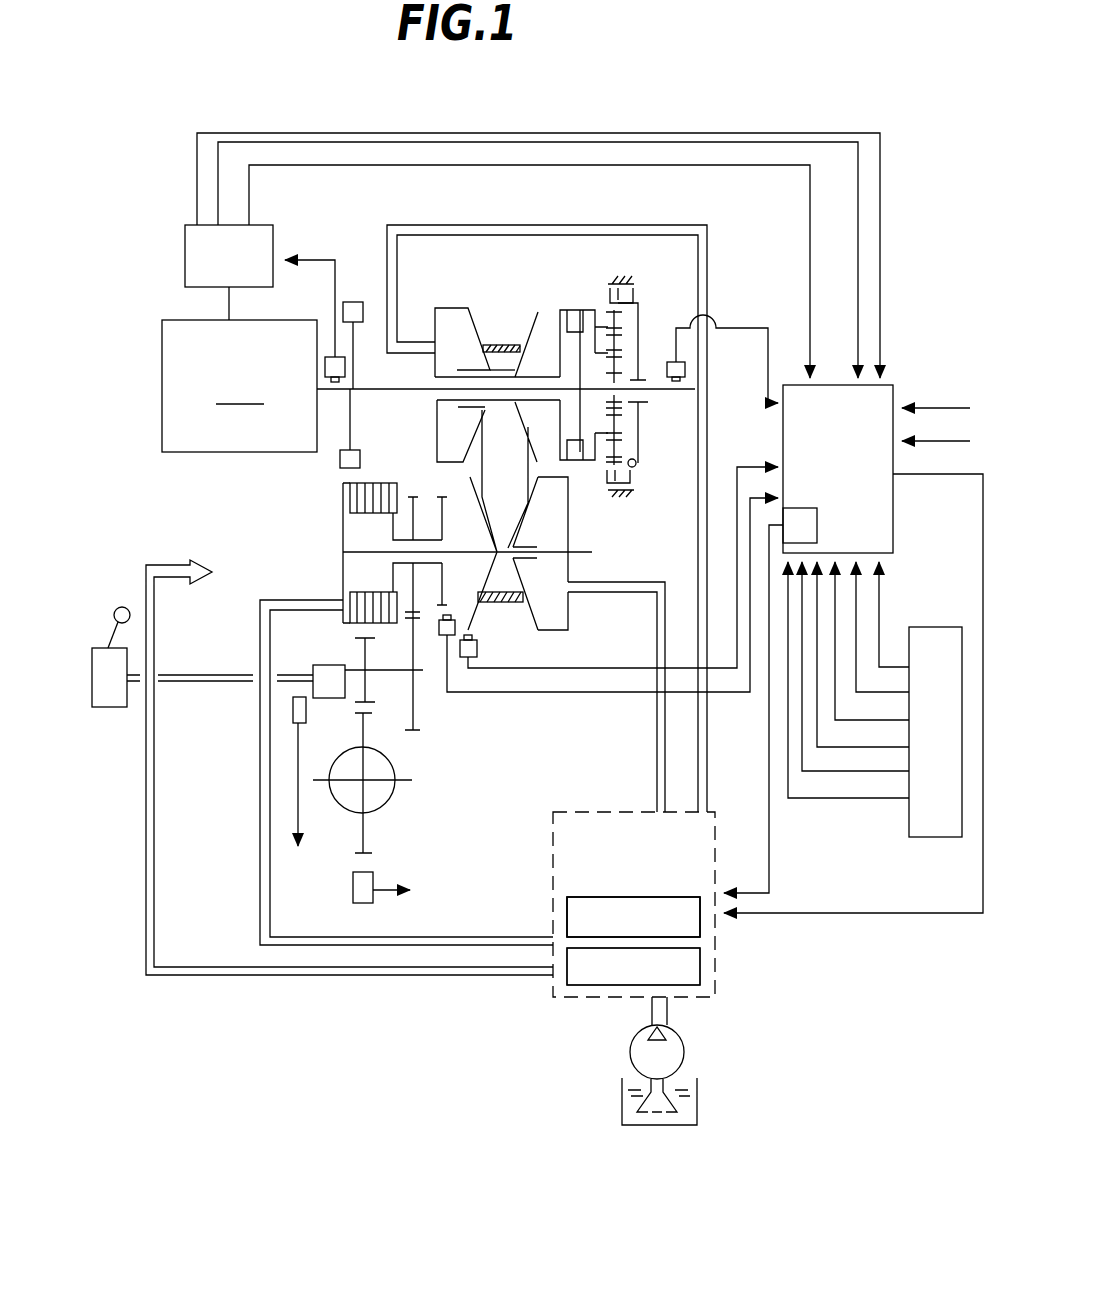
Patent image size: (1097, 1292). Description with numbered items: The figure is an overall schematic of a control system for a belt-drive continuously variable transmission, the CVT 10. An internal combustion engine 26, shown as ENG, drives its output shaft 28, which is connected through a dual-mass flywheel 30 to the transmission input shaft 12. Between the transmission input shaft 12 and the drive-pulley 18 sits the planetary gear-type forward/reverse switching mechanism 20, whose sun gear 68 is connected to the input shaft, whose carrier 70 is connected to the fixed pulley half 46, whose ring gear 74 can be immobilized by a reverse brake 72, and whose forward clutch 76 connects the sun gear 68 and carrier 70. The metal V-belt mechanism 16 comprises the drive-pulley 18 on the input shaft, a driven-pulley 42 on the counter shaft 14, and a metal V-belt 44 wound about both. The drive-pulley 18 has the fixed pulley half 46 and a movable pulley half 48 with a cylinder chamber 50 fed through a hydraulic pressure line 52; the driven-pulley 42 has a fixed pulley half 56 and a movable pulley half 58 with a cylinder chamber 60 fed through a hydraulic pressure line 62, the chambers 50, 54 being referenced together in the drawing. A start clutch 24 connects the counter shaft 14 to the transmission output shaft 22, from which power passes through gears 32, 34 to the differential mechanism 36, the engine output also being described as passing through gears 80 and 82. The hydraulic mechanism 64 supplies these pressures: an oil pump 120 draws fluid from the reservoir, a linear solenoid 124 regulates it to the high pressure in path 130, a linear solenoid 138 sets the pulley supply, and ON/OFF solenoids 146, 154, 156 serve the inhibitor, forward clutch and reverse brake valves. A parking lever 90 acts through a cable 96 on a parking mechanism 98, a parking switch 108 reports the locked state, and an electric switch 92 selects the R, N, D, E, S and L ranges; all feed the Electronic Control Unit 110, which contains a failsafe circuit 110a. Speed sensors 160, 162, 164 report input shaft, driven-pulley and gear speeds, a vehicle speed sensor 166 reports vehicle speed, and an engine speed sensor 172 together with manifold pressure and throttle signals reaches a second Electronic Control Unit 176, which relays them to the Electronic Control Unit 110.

The continuously variable transmission 10 is at (330, 493).
The transmission input shaft 12 is at (405, 393).
The counter shaft 14 is at (463, 557).
The metal V-belt mechanism 16 is at (580, 495).
The drive-pulley 18 is at (485, 303).
The planetary gear-type forward/reverse switching mechanism 20 is at (645, 371).
The transmission output shaft 22 is at (375, 672).
The start clutch 24 is at (382, 483).
The internal combustion engine 26 is at (227, 452).
The output shaft (crankshaft) 28 is at (338, 460).
The dual-mass flywheel 30 is at (355, 302).
The gear 32 is at (357, 633).
The gear 34 is at (367, 853).
The differential mechanism 36 is at (388, 790).
The driven-pulley 42 is at (575, 618).
The metal V-belt 44 is at (512, 462).
The fixed pulley half 46 is at (532, 327).
The movable pulley half 48 is at (458, 307).
The cylinder chamber 50 is at (473, 365).
The hydraulic pressure line 52 is at (477, 223).
The cylinder chamber 54 is at (268, 576).
The fixed pulley half 56 is at (482, 548).
The movable pulley half 58 is at (528, 613).
The cylinder chamber 60 is at (555, 535).
The hydraulic pressure line 62 is at (652, 580).
The hydraulic mechanism 64 is at (577, 810).
The sun gear 68 is at (620, 393).
The carrier 70 is at (632, 420).
The reverse brake 72 is at (633, 295).
The ring gear 74 is at (636, 466).
The forward clutch 76 is at (583, 310).
The gear 80 is at (413, 497).
The gear 82 is at (415, 733).
The parking lever 90 is at (107, 625).
The electric switch 92 is at (938, 627).
The cable 96 is at (195, 681).
The parking mechanism 98 is at (330, 698).
The parking switch 108 is at (290, 712).
The Electronic Control Unit 110 is at (848, 484).
The F/S (Failsafe) circuit 110a is at (817, 540).
The oil pump 120 is at (685, 1057).
The linear solenoid 124 is at (578, 990).
The path 130 is at (316, 767).
The linear solenoid 138 is at (633, 966).
The inhibitor solenoid INHSOL 146 is at (573, 897).
The forward solenoid FWDSOL 154 is at (633, 917).
The reverse solenoid RVSSOL 156 is at (633, 917).
The speed sensor 160 is at (685, 370).
The second speed sensor 162 is at (478, 660).
The third speed sensor 164 is at (440, 645).
The vehicle speed sensor 166 is at (353, 885).
The engine speed sensor 172 is at (330, 352).
The second Electronic Control Unit 176 is at (247, 272).